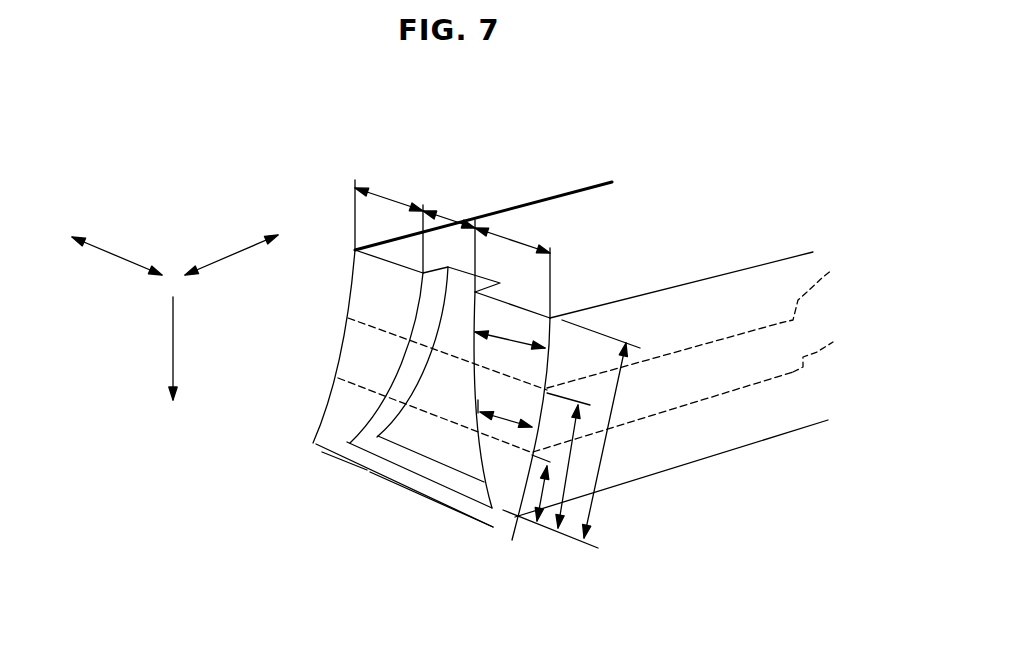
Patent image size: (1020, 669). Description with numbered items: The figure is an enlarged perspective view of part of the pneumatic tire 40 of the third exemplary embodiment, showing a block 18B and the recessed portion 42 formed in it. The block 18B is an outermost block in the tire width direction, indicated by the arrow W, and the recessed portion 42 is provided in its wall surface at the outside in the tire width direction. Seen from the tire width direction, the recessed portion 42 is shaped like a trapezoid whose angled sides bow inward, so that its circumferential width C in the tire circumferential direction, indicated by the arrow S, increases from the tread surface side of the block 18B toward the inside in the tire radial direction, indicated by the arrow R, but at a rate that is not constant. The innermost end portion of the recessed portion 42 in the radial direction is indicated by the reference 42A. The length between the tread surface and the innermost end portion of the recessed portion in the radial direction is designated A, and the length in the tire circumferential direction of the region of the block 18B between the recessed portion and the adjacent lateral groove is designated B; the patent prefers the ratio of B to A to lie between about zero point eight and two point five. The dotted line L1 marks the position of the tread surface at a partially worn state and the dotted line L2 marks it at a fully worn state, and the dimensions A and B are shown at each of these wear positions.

The pneumatic tire 40 is at (329, 160).
The block 18B is at (588, 180).
The recessed portion 42 is at (421, 403).
The innermost end portion 42A is at (407, 463).
The dotted line L1 is at (608, 325).
The dotted line L2 is at (604, 396).
The length A is at (602, 455).
The length B is at (390, 200).
The circumferential width C is at (447, 217).
The arrow S is at (120, 253).
The arrow W is at (233, 253).
The arrow R is at (173, 342).